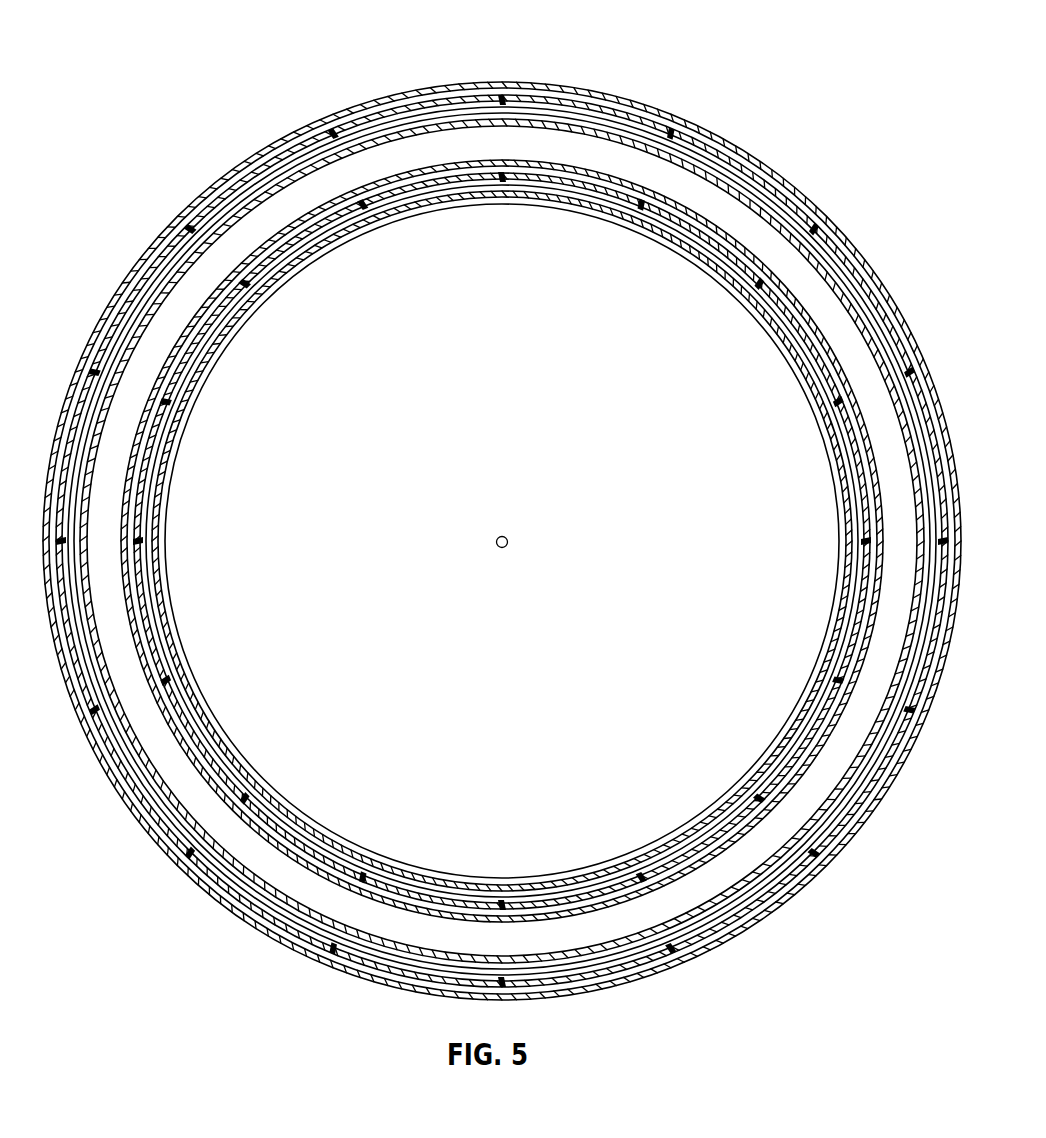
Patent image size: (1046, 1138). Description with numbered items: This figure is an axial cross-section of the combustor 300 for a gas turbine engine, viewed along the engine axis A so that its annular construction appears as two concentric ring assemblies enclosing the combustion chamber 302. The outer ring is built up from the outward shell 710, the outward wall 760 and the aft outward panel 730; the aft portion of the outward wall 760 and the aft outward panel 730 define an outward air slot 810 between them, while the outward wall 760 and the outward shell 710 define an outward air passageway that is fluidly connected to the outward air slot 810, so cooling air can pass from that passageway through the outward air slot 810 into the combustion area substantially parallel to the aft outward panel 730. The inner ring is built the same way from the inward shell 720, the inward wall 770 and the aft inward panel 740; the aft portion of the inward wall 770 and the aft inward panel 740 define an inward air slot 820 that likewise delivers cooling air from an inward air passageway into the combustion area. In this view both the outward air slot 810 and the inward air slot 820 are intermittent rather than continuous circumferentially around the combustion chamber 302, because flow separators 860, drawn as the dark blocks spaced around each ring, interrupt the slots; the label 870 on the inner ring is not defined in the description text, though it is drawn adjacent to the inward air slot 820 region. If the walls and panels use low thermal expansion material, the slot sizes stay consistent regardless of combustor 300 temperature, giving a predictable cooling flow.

The combustor 300 is at (126, 38).
The combustion chamber 302 is at (527, 157).
The outward shell 710 is at (508, 88).
The aft outward panel 730 is at (598, 97).
The outward wall 760 is at (713, 147).
The outward air slot 810 is at (767, 192).
The flow separators 860 is at (870, 273).
The inward shell 720 is at (523, 202).
The aft inward panel 740 is at (632, 218).
The inward wall 770 is at (748, 302).
The inward air slot 820 is at (797, 325).
The outer layer of inner ring 870 is at (802, 377).
The central axis A is at (507, 536).